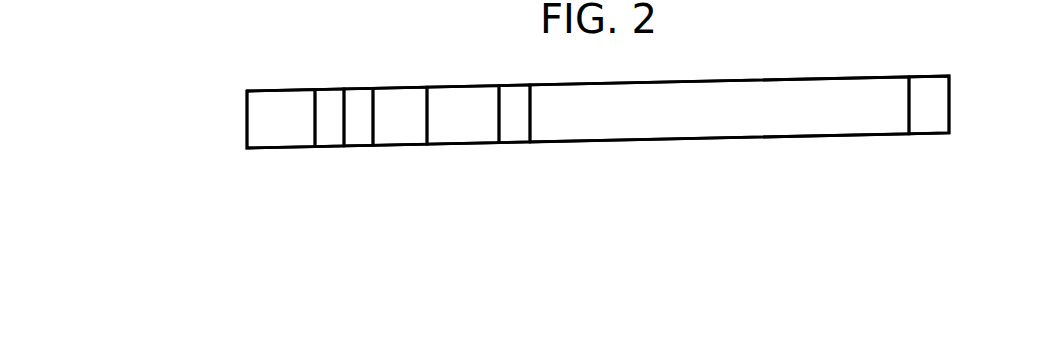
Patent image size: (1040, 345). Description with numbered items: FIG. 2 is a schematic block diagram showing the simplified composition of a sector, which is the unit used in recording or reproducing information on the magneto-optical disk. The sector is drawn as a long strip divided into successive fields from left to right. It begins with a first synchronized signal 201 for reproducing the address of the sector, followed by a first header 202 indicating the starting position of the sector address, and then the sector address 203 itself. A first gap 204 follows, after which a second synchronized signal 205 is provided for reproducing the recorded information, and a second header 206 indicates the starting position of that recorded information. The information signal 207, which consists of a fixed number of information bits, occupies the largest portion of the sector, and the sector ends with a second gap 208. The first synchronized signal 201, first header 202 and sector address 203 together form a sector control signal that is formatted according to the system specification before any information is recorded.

The synchronized signal (1) 201 is at (265, 140).
The header (1) 202 is at (333, 137).
The sector address 203 is at (358, 97).
The gap (1) 204 is at (391, 133).
The synchronized signal (2) 205 is at (464, 133).
The header (2) 206 is at (517, 130).
The information signal 207 is at (723, 125).
The gap (2) 208 is at (933, 123).